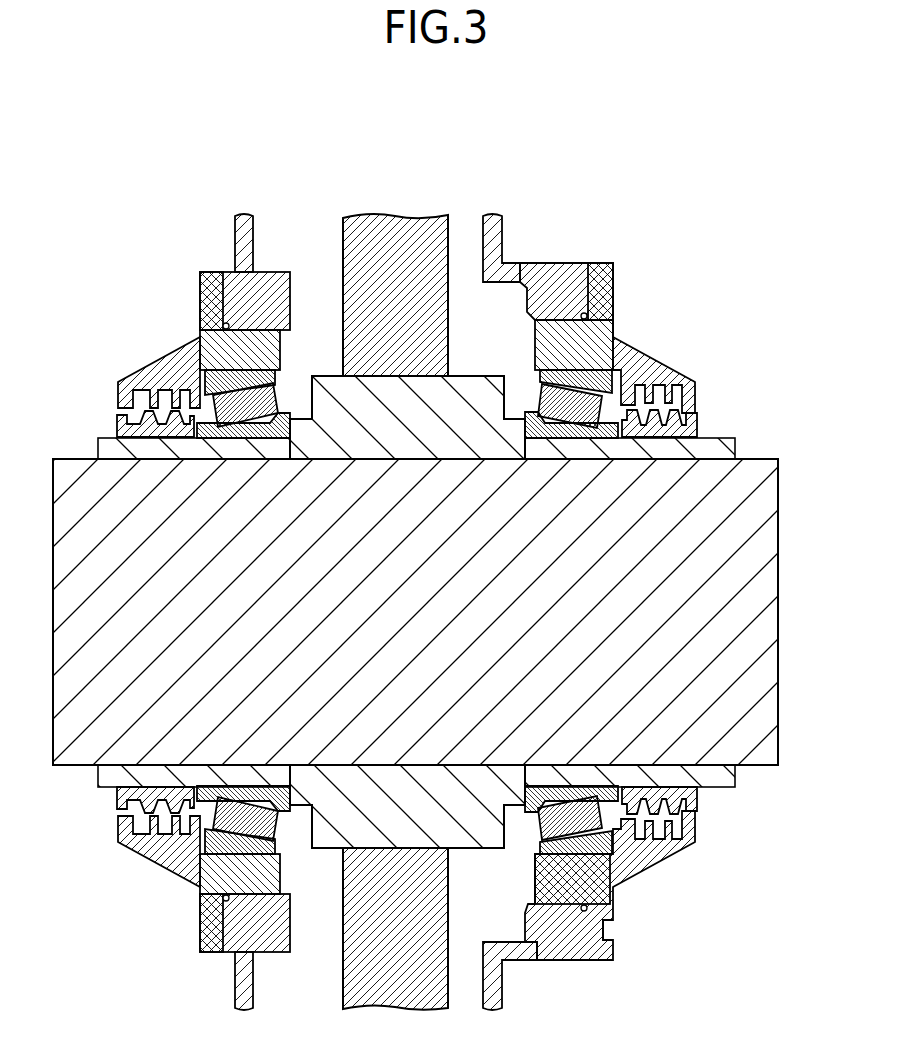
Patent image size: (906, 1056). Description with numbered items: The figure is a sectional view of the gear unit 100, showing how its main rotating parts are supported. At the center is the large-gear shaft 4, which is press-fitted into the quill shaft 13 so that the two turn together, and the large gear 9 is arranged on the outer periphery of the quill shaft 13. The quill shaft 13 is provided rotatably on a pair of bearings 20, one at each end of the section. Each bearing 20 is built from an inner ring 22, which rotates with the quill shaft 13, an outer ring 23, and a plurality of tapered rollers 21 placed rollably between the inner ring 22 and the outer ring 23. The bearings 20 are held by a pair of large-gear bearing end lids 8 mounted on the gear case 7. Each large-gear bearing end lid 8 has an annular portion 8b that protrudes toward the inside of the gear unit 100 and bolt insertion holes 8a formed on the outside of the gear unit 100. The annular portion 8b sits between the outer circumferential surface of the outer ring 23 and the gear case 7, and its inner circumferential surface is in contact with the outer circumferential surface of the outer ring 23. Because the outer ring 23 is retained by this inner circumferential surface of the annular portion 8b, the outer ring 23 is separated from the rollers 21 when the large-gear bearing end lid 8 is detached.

The gear unit 100 is at (430, 172).
The large-gear shaft 4 is at (765, 495).
The large gear 9 is at (396, 232).
The quill shaft 13 is at (728, 446).
The gear case 7 is at (247, 243).
The large-gear bearing end lid 8 is at (208, 293).
The bolt insertion holes 8a is at (605, 931).
The annular portion 8b is at (537, 878).
The bearing 20 is at (407, 592).
The rollers 21 is at (198, 340).
The inner ring 22 is at (208, 372).
The outer ring 23 is at (222, 423).